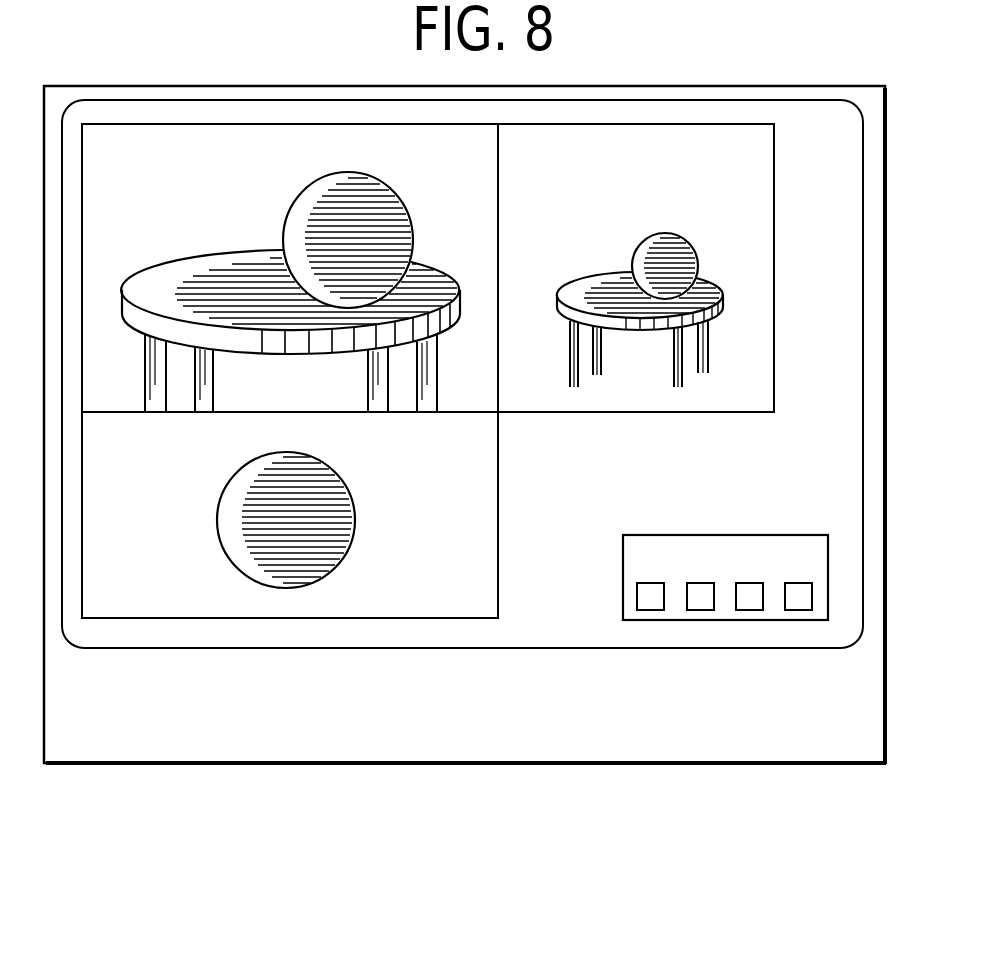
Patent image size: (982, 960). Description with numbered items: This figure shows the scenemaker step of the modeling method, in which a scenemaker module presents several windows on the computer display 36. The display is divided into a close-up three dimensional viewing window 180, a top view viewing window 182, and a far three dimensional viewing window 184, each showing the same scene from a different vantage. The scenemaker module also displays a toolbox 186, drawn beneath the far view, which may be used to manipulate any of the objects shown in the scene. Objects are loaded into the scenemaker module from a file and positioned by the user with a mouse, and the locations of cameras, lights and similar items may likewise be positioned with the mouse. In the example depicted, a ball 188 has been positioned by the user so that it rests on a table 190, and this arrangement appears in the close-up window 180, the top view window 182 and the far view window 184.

The computer display 36 is at (568, 766).
The close-up three dimensional viewing window 180 is at (292, 273).
The top view viewing window 182 is at (212, 472).
The far three dimensional viewing window 184 is at (649, 218).
The toolbox 186 is at (705, 523).
The ball 188 is at (400, 197).
The table 190 is at (447, 274).